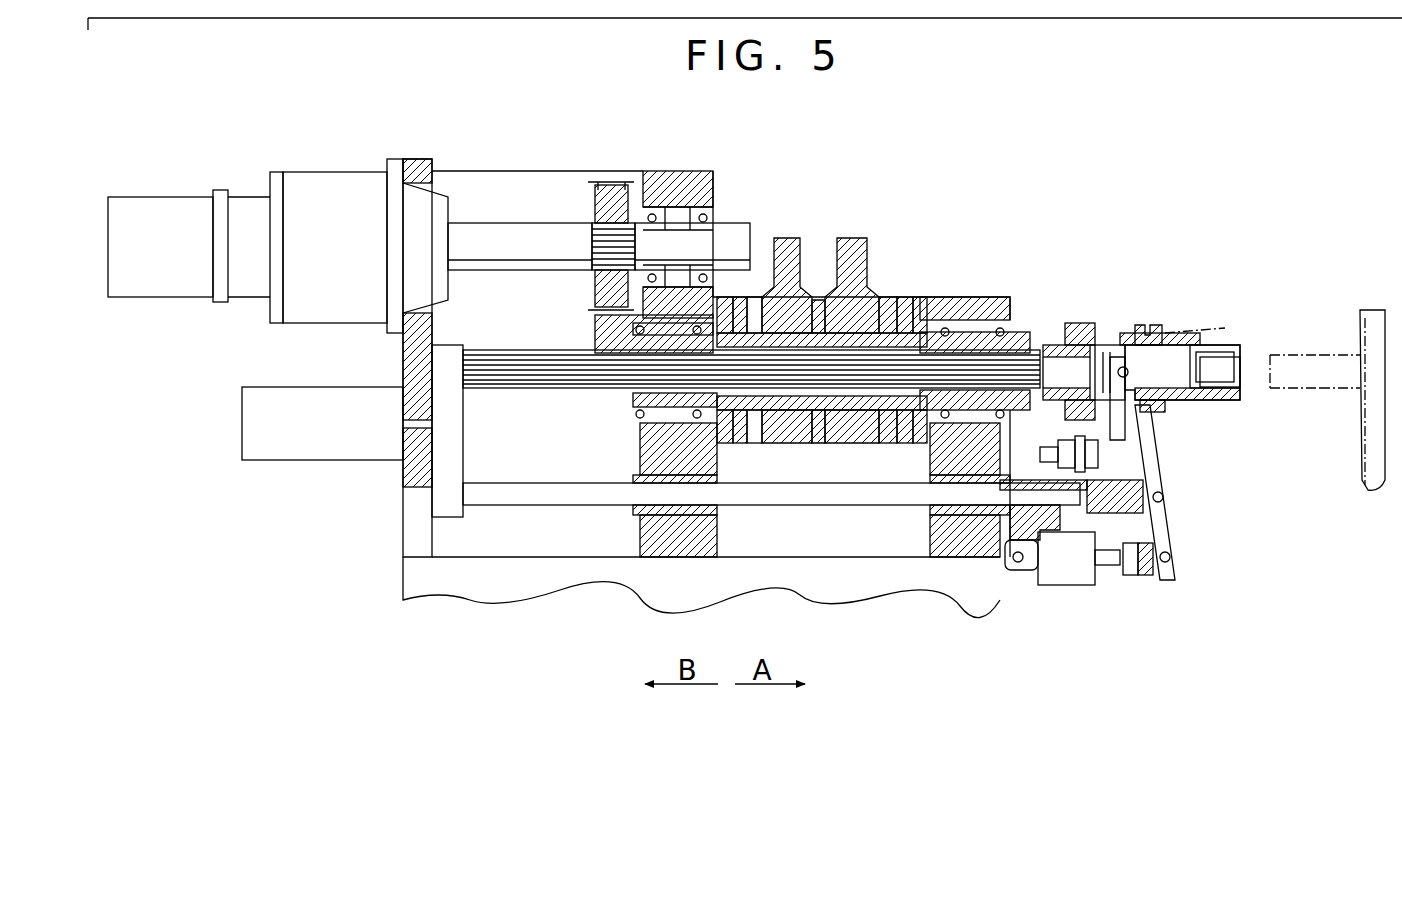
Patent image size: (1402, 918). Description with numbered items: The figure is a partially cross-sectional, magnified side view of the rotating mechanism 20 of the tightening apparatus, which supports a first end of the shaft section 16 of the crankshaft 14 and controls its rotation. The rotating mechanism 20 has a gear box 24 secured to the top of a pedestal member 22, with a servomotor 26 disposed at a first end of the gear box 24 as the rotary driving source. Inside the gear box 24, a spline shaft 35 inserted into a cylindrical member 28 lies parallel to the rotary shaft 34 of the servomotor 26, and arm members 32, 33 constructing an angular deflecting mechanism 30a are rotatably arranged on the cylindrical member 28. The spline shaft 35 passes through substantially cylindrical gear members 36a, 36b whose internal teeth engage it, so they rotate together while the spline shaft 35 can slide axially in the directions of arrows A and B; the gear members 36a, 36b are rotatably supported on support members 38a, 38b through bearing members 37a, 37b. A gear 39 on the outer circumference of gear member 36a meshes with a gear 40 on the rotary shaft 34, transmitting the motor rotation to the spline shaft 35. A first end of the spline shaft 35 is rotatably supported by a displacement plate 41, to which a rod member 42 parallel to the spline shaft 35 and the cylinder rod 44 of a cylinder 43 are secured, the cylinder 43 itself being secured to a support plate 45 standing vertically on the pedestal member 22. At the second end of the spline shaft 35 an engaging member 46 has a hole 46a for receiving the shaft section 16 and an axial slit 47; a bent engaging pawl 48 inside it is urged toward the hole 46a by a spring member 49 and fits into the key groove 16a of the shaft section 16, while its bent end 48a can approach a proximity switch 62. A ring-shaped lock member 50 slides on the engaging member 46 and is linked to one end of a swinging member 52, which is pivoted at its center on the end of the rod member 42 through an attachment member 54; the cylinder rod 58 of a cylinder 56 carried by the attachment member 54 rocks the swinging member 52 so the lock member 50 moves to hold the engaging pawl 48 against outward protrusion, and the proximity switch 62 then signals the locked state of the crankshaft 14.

The crankshaft 14 is at (1370, 310).
The shaft section 16 is at (1335, 375).
The key groove 16a is at (1280, 357).
The rotating mechanism 20 is at (972, 113).
The pedestal member 22 is at (503, 590).
The gear box 24 is at (598, 172).
The servomotor 26 is at (330, 185).
The cylindrical member 28 is at (865, 333).
The angular deflecting mechanism 30a is at (825, 172).
The arm member 32 is at (792, 240).
The arm member 33 is at (852, 240).
The rotary shaft 34 is at (510, 235).
The spline shaft 35 is at (497, 360).
The gear member 36a is at (595, 400).
The gear member 36b is at (963, 345).
The bearing member 37a is at (630, 450).
The bearing member 37b is at (980, 305).
The support member 38a is at (697, 560).
The support member 38b is at (948, 560).
The gear 39 is at (598, 330).
The gear 40 is at (598, 290).
The displacement plate 41 is at (403, 467).
The rod member 42 is at (537, 497).
The cylinder 43 is at (275, 397).
The cylinder rod 44 is at (403, 420).
The support plate 45 is at (415, 530).
The engaging member 46 is at (1098, 318).
The hole 46a is at (1200, 400).
The slit 47 is at (1120, 352).
The engaging pawl 48 is at (1178, 333).
The end 48a is at (1165, 405).
The spring member 49 is at (1145, 345).
The lock member 50 is at (1125, 410).
The swinging member 52 is at (1175, 510).
The attachment member 54 is at (1100, 565).
The cylinder 56 is at (1057, 577).
The cylinder rod 58 is at (1140, 565).
The proximity switch 62 is at (1040, 455).